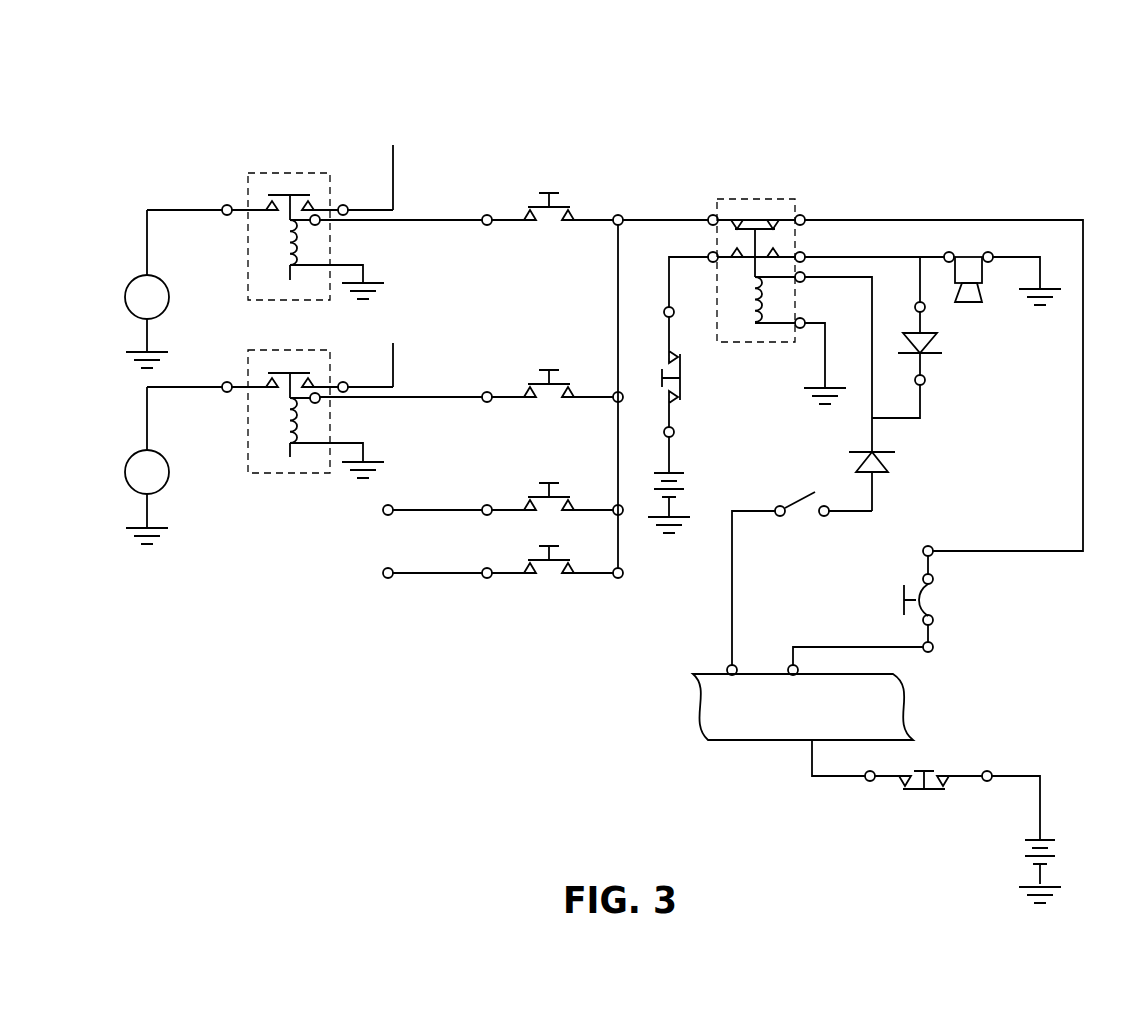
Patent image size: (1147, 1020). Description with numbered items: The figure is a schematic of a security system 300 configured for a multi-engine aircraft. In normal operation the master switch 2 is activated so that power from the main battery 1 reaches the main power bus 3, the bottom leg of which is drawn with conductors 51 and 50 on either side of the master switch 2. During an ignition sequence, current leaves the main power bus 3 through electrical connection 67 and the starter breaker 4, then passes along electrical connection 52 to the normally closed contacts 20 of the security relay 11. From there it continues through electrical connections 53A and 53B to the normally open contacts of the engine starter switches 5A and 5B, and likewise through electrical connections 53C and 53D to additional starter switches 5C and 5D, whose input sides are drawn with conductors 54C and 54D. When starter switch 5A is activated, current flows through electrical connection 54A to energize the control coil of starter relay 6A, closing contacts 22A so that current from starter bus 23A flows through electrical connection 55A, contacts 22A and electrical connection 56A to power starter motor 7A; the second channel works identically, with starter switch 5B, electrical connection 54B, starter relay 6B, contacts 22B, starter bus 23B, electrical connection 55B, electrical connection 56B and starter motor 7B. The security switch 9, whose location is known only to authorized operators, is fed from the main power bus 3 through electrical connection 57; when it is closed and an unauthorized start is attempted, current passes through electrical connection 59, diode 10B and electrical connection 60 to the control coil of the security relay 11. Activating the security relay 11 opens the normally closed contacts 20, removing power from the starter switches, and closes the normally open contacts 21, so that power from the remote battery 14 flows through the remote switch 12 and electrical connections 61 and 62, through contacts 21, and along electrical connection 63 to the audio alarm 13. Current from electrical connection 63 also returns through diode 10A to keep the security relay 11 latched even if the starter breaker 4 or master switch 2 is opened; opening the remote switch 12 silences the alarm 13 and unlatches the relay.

The security system 300 is at (1018, 112).
The main battery 1 is at (1052, 858).
The master switch 2 is at (936, 791).
The main power bus 3 is at (699, 709).
The starter breaker 4 is at (917, 589).
The engine starter switch 5A is at (540, 206).
The engine starter switch 5B is at (540, 383).
The starter switch 5C is at (540, 497).
The starter switch 5D is at (540, 560).
The starter relay 6A is at (246, 257).
The engine starter relay 6B is at (246, 442).
The starter motor 7A is at (125, 297).
The starter motor 7B is at (125, 472).
The security switch 9 is at (794, 500).
The diode 10A is at (925, 355).
The diode 10B is at (878, 451).
The security relay 11 is at (754, 345).
The remote switch 12 is at (681, 378).
The audio alarm 13 is at (971, 256).
The remote battery 14 is at (681, 488).
The normally closed contacts 20 is at (777, 287).
The normally open contacts 21 is at (776, 255).
The contacts 22A is at (300, 215).
The contacts 22B is at (300, 396).
The starter bus 23A is at (415, 112).
The starter bus 23B is at (415, 312).
The conductor 50 is at (1017, 776).
The conductor 51 is at (838, 780).
The electrical connection 52 is at (1010, 550).
The electrical connection 53A is at (588, 212).
The electrical connection 53B is at (588, 394).
The electrical connection 53C is at (588, 507).
The electrical connection 53D is at (588, 570).
The electrical connection 54A is at (400, 224).
The electrical connection 54B is at (400, 402).
The conductor 54C is at (439, 509).
The conductor 54D is at (439, 572).
The electrical connection 55A is at (395, 178).
The electrical connection 55B is at (396, 367).
The electrical connection 56A is at (185, 205).
The electrical connection 56B is at (198, 386).
The electrical connection 57 is at (730, 591).
The electrical connection 59 is at (873, 496).
The electrical connection 60 is at (923, 406).
The electrical connection 61 is at (672, 452).
The electrical connection 62 is at (672, 284).
The electrical connection 63 is at (878, 256).
The electrical connection 67 is at (862, 647).